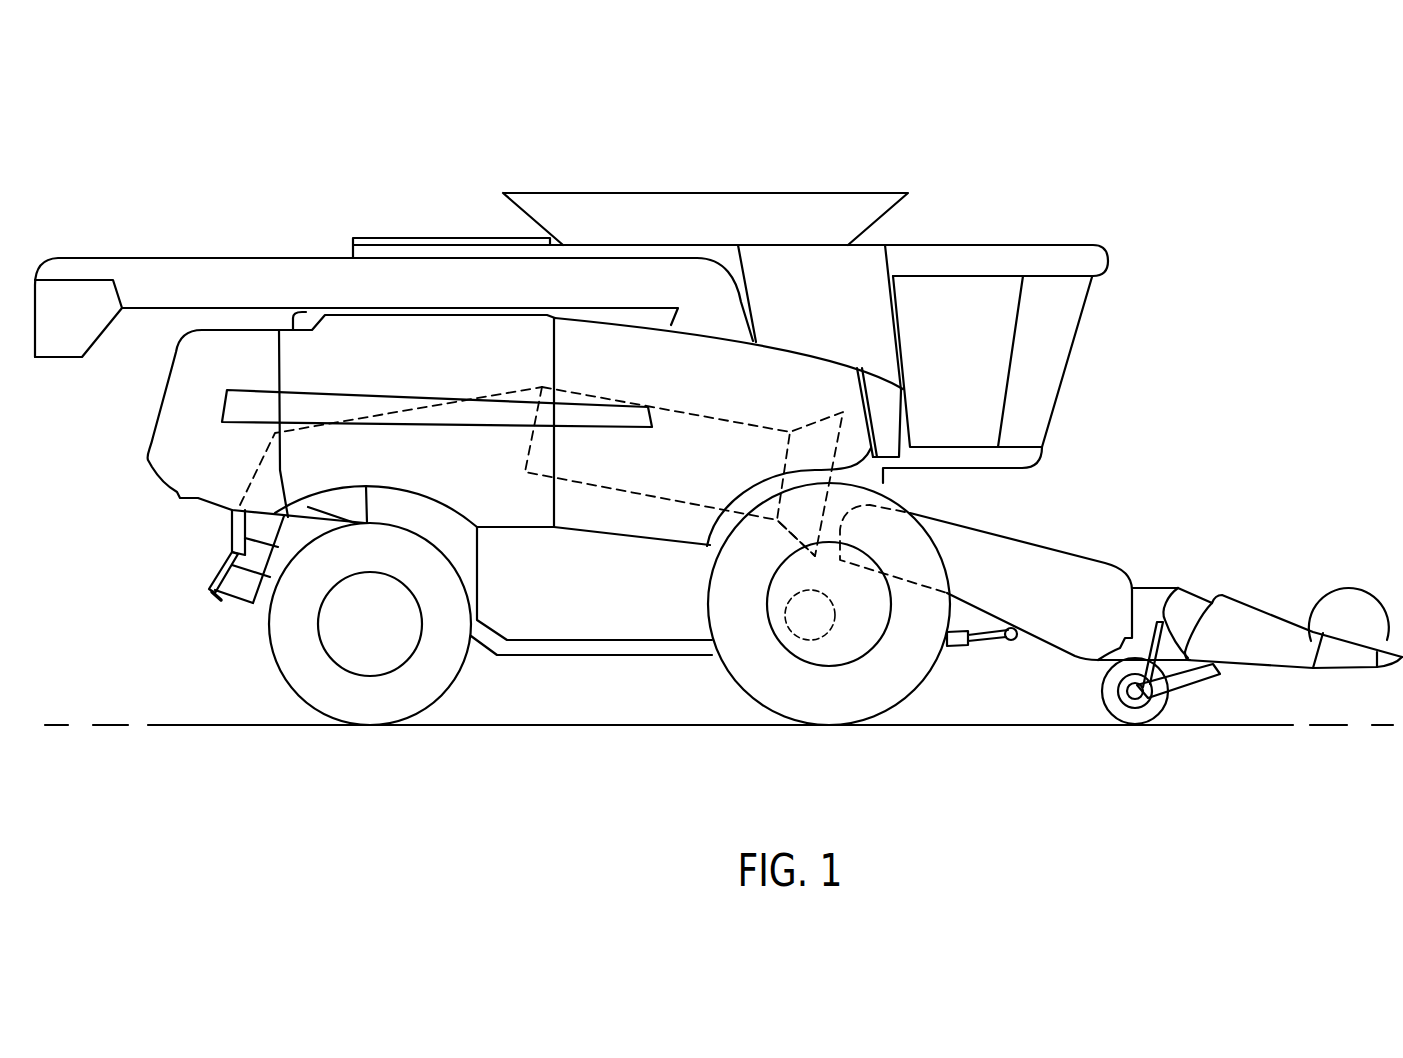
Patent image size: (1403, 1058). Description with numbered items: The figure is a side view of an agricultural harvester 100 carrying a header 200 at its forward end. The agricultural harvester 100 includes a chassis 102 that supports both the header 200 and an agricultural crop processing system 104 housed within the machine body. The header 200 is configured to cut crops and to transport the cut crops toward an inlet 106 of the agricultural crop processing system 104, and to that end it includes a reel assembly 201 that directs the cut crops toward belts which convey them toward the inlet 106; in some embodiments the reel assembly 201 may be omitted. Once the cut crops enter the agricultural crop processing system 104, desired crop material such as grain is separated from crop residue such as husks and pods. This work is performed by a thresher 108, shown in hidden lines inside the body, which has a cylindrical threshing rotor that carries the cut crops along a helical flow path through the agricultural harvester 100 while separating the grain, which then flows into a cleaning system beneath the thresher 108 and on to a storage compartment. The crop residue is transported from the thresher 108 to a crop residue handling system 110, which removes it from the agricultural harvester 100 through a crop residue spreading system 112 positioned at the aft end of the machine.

The agricultural harvester 100 is at (1105, 148).
The chassis 102 is at (532, 658).
The agricultural crop processing system 104 is at (692, 385).
The inlet 106 is at (917, 508).
The thresher 108 is at (702, 414).
The crop residue handling system 110 is at (335, 382).
The crop residue spreading system 112 is at (215, 568).
The header 200 is at (1305, 567).
The reel assembly 201 is at (1347, 570).